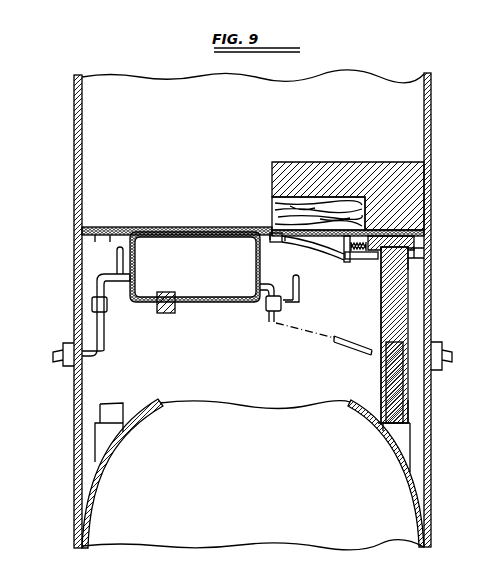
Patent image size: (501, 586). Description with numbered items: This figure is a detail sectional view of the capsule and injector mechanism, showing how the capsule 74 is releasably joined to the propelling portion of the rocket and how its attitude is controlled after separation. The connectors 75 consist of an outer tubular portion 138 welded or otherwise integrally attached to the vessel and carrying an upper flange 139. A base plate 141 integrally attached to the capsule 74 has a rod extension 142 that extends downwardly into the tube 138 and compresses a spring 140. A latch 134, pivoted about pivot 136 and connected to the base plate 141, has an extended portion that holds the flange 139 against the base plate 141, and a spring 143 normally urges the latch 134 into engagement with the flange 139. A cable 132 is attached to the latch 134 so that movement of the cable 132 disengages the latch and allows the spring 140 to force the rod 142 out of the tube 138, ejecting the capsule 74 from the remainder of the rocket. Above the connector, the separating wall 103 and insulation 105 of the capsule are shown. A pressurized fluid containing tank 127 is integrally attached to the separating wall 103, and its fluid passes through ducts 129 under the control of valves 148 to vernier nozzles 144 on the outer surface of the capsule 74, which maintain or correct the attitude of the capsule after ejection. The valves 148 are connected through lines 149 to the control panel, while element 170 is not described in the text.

The capsule 74 is at (431, 145).
The separating wall 103 is at (213, 227).
The insulation 105 is at (272, 214).
The pivot 136 is at (367, 236).
The base plate 141 is at (407, 236).
The upper flange 139 is at (425, 250).
The connectors 75 is at (418, 287).
The rod extension 142 is at (410, 309).
The outer tubular portion 138 is at (405, 326).
The spring 140 is at (400, 383).
The pressurized fluid containing tank 127 is at (200, 302).
The ducts 129 is at (106, 347).
The valves 148 is at (107, 306).
The lines 149 is at (117, 255).
The cable 132 is at (318, 246).
The latch 134 is at (376, 262).
The spring 143 is at (358, 253).
The vernier nozzles 144 is at (73, 372).
The dome 170 is at (383, 425).